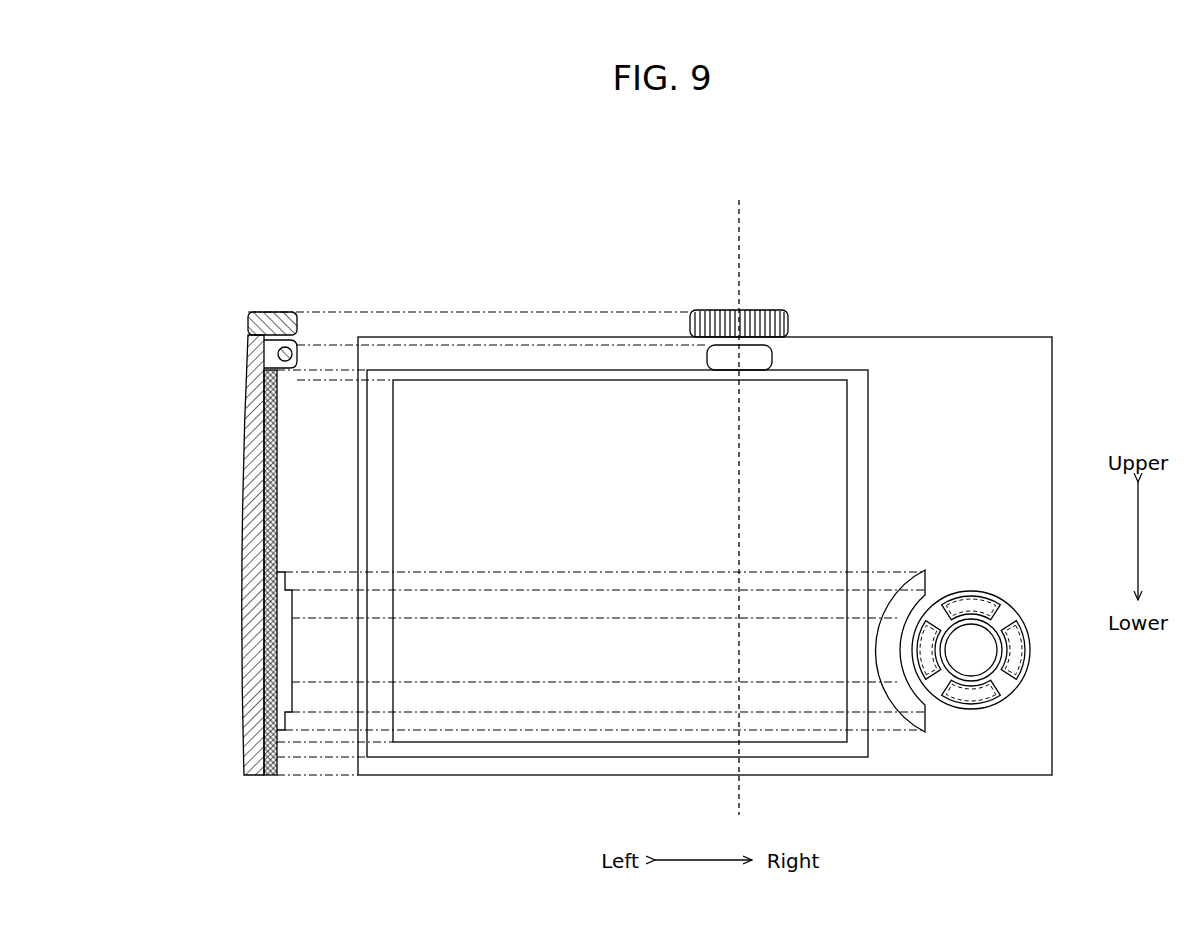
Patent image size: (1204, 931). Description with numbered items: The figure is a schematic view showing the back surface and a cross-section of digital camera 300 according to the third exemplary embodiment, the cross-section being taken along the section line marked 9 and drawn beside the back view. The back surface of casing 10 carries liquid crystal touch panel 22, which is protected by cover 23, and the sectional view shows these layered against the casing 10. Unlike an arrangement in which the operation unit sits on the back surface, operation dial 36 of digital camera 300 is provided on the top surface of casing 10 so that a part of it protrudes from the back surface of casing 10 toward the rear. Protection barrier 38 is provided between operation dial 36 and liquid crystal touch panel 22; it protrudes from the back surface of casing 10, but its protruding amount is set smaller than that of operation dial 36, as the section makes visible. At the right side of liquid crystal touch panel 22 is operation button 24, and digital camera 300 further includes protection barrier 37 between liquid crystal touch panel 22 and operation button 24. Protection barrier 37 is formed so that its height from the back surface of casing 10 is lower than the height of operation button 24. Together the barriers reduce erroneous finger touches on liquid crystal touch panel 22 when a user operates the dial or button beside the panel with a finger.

The digital camera 300 is at (465, 216).
The section line 9 is at (737, 203).
The casing 10 is at (248, 778).
The liquid crystal touch panel 22 is at (250, 500).
The cover 23 is at (280, 396).
The operation button 24 is at (1005, 685).
The operation dial 36 is at (273, 312).
The protection barrier 37 is at (928, 584).
The protection barrier 38 is at (297, 345).